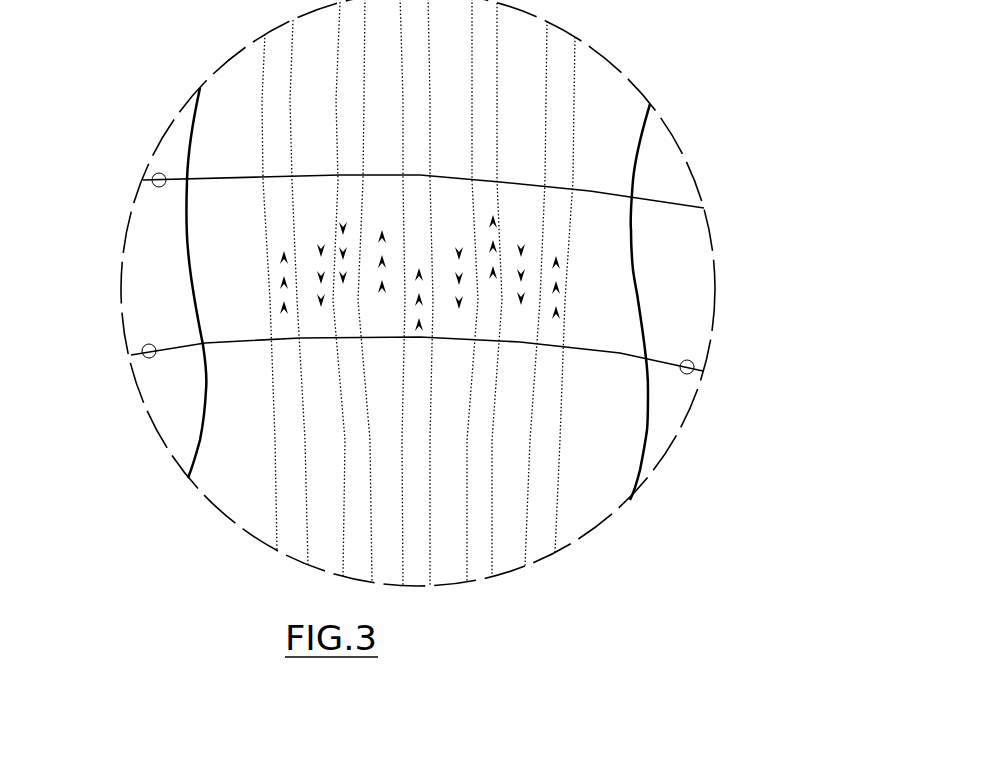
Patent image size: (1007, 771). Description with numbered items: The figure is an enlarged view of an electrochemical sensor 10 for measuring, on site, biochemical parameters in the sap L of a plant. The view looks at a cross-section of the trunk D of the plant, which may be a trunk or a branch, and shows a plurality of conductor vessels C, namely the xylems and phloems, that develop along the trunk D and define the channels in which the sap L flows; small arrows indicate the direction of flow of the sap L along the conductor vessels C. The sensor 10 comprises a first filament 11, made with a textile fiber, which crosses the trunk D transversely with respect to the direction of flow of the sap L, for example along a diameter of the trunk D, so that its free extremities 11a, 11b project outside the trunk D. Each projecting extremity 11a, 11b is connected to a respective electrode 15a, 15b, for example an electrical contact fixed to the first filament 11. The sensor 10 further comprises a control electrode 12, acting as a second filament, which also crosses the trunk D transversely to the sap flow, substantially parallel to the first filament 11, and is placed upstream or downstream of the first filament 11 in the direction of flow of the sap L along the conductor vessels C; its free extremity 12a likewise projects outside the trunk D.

The electrochemical sensor 10 is at (190, 275).
The first filament 11 is at (610, 347).
The free extremity of the first filament 11a is at (130, 357).
The free extremity of the first filament 11b is at (693, 373).
The control electrode 12 is at (597, 190).
The free extremity of the control electrode 12a is at (158, 173).
The electrode 15a is at (153, 357).
The electrode 15b is at (708, 353).
The conductor vessels C is at (462, 68).
The trunk of the plant D is at (645, 457).
The sap L is at (500, 225).